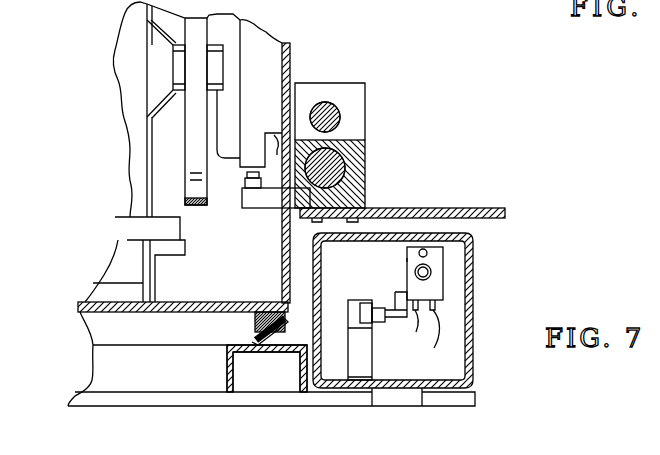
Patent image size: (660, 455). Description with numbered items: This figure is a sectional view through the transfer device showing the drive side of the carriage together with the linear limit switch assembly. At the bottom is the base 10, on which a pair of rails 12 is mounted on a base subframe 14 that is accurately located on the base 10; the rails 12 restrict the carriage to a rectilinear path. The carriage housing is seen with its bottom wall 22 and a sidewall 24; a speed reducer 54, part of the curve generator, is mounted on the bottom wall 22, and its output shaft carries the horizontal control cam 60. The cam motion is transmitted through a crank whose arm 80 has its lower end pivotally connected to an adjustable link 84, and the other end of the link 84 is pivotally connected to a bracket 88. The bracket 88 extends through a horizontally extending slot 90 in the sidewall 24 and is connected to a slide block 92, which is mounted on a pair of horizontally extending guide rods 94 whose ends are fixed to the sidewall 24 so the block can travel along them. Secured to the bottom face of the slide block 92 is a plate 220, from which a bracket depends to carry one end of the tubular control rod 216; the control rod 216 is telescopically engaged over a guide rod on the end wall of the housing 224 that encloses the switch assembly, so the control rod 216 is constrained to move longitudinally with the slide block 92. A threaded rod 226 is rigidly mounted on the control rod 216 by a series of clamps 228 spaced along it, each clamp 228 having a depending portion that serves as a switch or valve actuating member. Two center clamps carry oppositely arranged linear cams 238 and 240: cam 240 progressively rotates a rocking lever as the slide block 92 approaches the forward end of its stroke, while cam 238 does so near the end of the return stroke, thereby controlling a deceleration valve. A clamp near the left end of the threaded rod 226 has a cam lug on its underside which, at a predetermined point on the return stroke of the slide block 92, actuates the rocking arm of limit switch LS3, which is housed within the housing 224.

The base 10 is at (195, 404).
The rails 12 is at (252, 337).
The base subframe 14 is at (227, 360).
The bottom wall 22 is at (178, 303).
The sidewall 24 is at (292, 50).
The speed reducer 54 is at (125, 64).
The horizontal control cam 60 is at (197, 206).
The arm 80 is at (233, 58).
The adjustable link 84 is at (240, 189).
The bracket 88 is at (262, 204).
The slot 90 is at (276, 140).
The slide block 92 is at (368, 150).
The guide rods 94 is at (336, 108).
The plate 220 is at (451, 206).
The housing 224 is at (474, 313).
The tubular control rod 216 is at (440, 268).
The threaded rod 226 is at (428, 250).
The clamps 228 is at (407, 260).
The linear cam 238 is at (427, 343).
The linear cam 240 is at (404, 332).
The limit switch LS3 is at (362, 301).